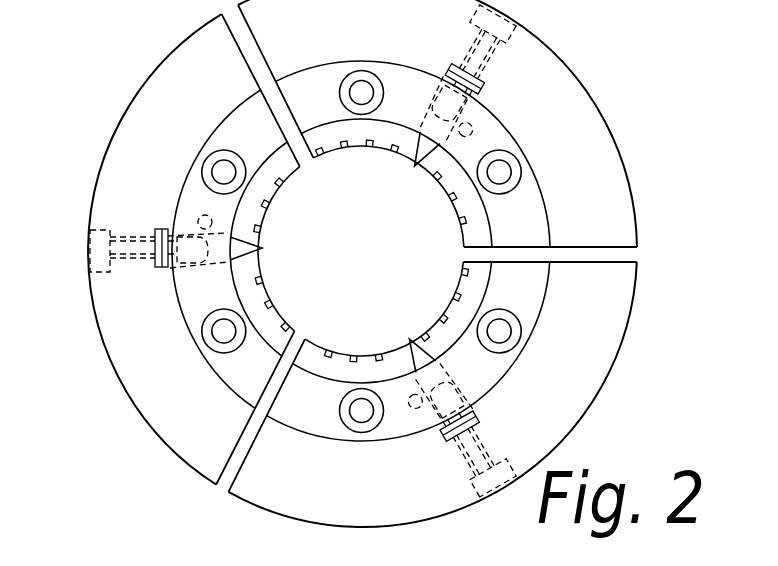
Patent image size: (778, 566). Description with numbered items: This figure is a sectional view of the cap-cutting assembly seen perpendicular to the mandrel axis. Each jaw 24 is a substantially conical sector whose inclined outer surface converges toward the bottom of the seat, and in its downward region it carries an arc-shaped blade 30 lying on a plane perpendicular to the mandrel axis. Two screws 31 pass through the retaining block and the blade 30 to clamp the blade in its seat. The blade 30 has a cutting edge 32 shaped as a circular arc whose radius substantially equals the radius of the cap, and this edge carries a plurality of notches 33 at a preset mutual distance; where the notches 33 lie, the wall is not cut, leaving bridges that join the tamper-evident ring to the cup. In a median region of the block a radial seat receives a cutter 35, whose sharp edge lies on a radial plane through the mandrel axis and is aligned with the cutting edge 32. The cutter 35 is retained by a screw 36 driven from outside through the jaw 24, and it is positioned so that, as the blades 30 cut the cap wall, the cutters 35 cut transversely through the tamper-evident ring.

The jaw 24 is at (162, 88).
The screws 31 is at (214, 173).
The blade 30 is at (462, 190).
The cutting edge 32 is at (278, 205).
The notches 33 is at (404, 160).
The cutter 35 is at (412, 335).
The screw 36 is at (90, 258).